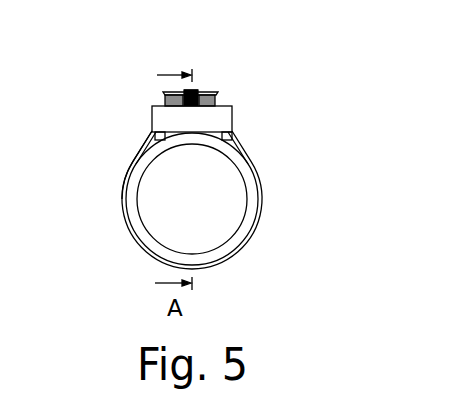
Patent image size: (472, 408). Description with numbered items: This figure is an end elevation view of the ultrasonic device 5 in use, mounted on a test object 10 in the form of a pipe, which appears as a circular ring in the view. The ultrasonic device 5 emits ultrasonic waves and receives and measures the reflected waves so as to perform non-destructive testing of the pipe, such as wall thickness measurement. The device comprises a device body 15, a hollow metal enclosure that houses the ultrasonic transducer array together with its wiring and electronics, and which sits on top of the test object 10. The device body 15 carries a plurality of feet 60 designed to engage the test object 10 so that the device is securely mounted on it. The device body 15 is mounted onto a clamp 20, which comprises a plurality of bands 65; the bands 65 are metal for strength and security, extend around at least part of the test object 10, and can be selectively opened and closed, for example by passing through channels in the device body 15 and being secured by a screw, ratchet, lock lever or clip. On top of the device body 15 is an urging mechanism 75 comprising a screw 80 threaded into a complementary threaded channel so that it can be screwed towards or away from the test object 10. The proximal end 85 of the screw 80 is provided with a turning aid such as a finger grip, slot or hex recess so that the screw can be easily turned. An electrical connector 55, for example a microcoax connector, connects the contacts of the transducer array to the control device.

The ultrasonic device 5 is at (112, 105).
The test object 10 is at (238, 233).
The device body 15 is at (225, 112).
The clamp 20 is at (245, 150).
The electrical connector 55 is at (197, 90).
The feet 60 is at (152, 134).
The bands 65 is at (140, 148).
The urging mechanism 75 is at (182, 92).
The screw 80 is at (170, 100).
The proximal end 85 is at (190, 90).